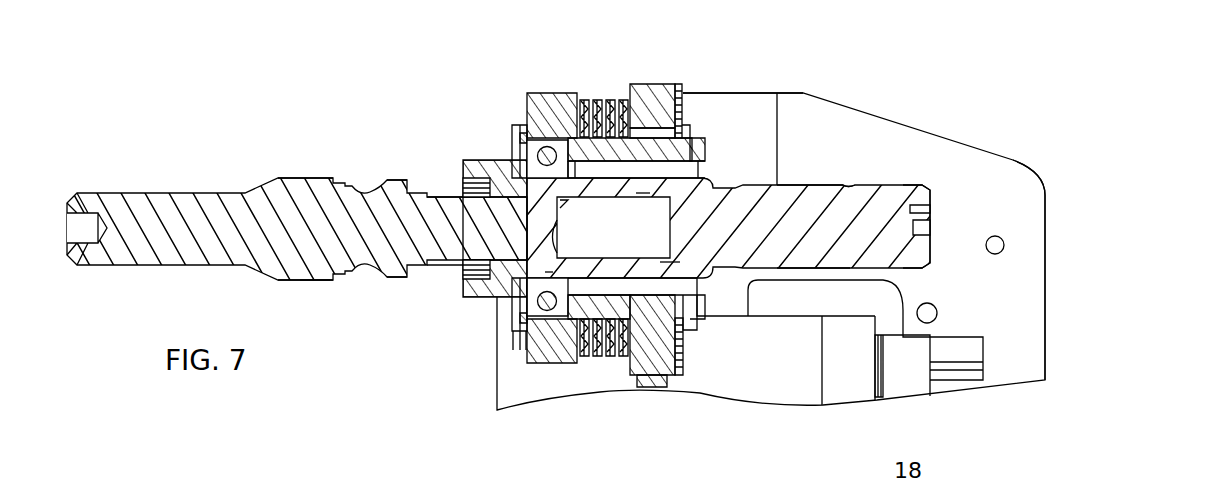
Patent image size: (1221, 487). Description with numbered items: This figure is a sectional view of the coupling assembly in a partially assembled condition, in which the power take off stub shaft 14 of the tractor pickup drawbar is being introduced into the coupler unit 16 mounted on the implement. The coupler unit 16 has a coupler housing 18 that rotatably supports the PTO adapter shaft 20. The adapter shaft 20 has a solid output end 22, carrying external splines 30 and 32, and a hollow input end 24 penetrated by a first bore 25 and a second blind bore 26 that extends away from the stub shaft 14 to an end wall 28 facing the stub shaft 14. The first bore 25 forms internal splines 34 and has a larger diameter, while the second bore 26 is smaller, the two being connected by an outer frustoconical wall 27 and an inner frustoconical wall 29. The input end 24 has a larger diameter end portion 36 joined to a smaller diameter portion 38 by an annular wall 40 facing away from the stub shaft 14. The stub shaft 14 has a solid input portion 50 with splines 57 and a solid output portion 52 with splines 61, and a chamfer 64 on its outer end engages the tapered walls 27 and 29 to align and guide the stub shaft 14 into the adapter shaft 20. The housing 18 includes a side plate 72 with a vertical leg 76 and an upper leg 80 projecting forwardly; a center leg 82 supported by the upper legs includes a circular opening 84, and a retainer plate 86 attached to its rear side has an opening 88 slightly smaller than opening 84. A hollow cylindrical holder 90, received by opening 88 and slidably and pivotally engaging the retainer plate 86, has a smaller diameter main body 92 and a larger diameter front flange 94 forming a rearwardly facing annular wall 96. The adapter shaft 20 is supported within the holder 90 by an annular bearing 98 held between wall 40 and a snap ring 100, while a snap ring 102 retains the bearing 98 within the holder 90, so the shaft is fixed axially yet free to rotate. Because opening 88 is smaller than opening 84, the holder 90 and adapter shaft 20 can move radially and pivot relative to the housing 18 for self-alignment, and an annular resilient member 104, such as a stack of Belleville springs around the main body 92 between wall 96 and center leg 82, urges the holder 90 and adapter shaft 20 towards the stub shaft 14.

The power take off stub shaft 14 is at (331, 296).
The coupler unit 16 is at (1090, 255).
The coupler housing 18 is at (1045, 153).
The PTO adapter shaft 20 is at (724, 173).
The solid output end 22 is at (854, 164).
The hollow input end 24 is at (676, 85).
The first bore 25 is at (547, 277).
The second blind bore 26 is at (643, 198).
The outer frustoconical wall 27 is at (457, 194).
The end wall 28 is at (664, 246).
The inner frustoconical wall 29 is at (570, 364).
The external splines 30 is at (807, 182).
The external splines 32 is at (903, 184).
The internal splines 34 is at (468, 160).
The larger diameter end portion 36 is at (487, 160).
The smaller diameter portion 38 is at (648, 164).
The annular wall 40 is at (568, 161).
The solid input portion 50 is at (194, 172).
The solid output portion 52 is at (452, 277).
The splines 57 is at (318, 176).
The splines 61 is at (396, 280).
The chamfer 64 is at (562, 248).
The side plate 72 is at (1066, 224).
The vertical leg 76 is at (985, 305).
The upper leg 80 is at (737, 93).
The center leg 82 is at (650, 84).
The circular opening 84 is at (698, 140).
The retainer plate 86 is at (682, 84).
The opening 88 is at (698, 305).
The hollow cylindrical holder 90 is at (560, 80).
The main body 92 is at (598, 100).
The front flange 94 is at (530, 93).
The annular wall 96 is at (590, 357).
The annular bearing 98 is at (550, 330).
The snap ring 100 is at (562, 262).
The snap ring 102 is at (520, 333).
The annular resilient member 104 is at (645, 388).